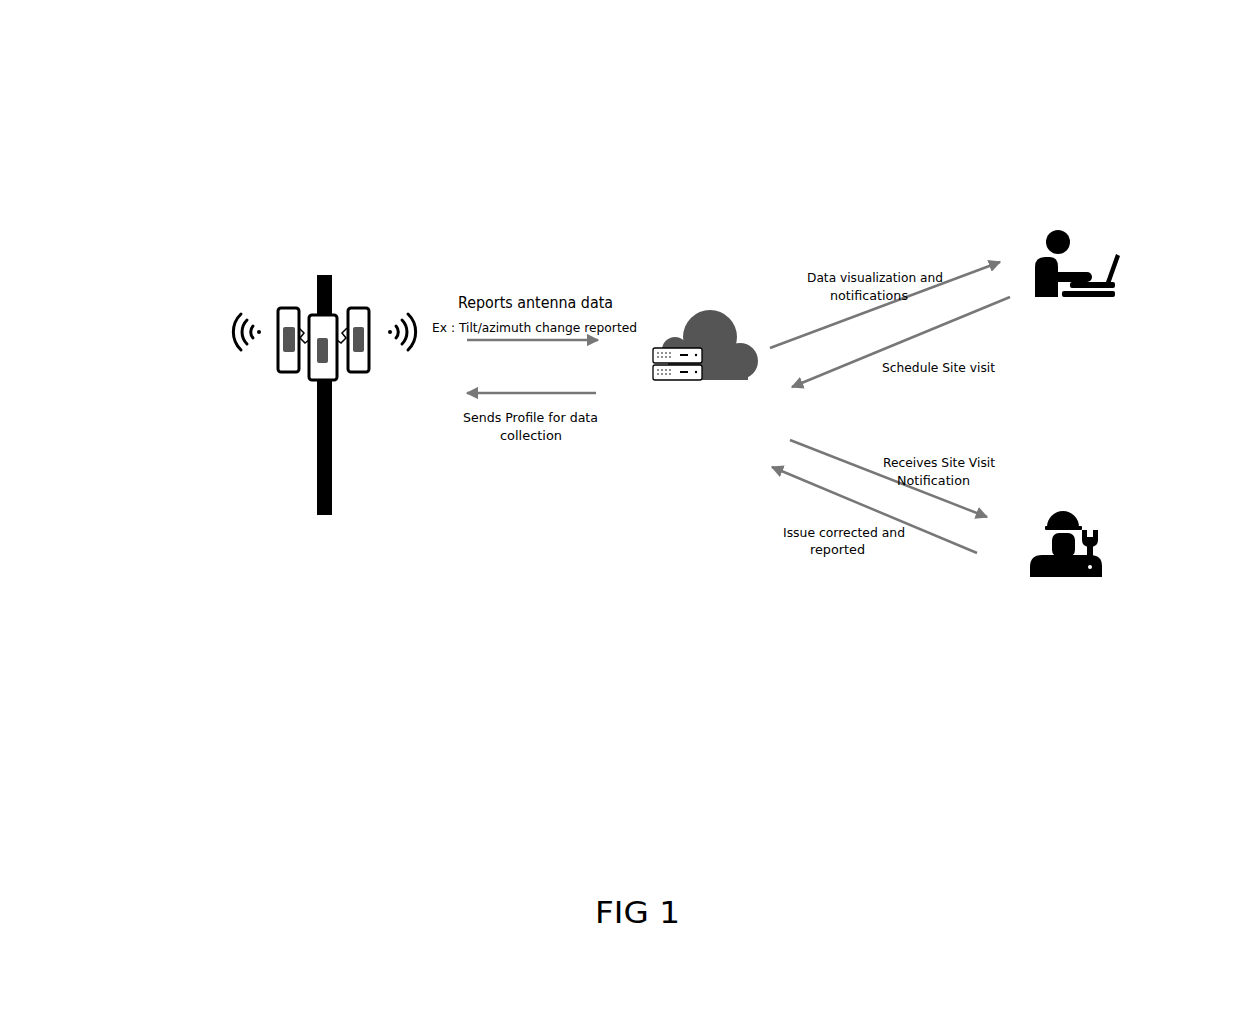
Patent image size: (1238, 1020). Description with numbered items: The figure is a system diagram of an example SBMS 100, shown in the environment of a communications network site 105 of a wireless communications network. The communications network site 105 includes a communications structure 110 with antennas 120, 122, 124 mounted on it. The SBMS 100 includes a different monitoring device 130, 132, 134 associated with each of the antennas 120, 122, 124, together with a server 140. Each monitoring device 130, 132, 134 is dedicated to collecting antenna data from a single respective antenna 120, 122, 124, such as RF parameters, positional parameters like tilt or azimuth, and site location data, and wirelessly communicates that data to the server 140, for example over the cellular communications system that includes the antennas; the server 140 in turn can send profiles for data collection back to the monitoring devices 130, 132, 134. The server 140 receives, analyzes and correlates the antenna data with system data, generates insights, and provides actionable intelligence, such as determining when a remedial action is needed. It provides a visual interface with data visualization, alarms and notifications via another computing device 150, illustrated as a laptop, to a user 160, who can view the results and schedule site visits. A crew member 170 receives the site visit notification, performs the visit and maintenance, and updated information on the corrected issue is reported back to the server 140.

The SBMS 100 is at (183, 107).
The communications network site 105 is at (354, 542).
The communications structure 110 is at (318, 500).
The antenna 120 is at (290, 305).
The antenna 122 is at (315, 310).
The antenna 124 is at (357, 305).
The monitoring device 130 is at (290, 352).
The monitoring device 132 is at (321, 366).
The monitoring device 134 is at (360, 350).
The server 140 is at (710, 325).
The computing device 150 is at (1118, 255).
The user 160 is at (1055, 228).
The crew member 170 is at (1068, 508).